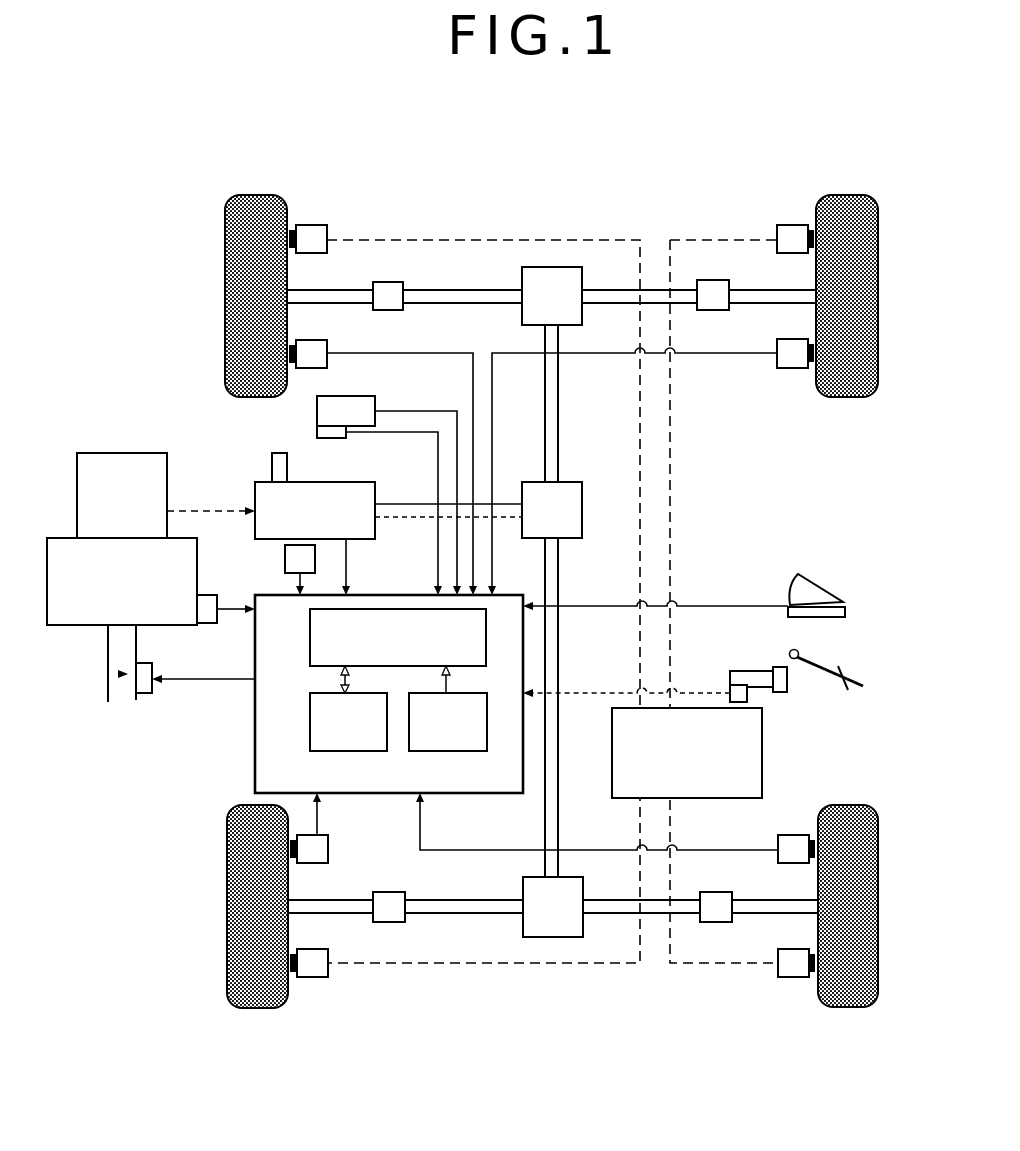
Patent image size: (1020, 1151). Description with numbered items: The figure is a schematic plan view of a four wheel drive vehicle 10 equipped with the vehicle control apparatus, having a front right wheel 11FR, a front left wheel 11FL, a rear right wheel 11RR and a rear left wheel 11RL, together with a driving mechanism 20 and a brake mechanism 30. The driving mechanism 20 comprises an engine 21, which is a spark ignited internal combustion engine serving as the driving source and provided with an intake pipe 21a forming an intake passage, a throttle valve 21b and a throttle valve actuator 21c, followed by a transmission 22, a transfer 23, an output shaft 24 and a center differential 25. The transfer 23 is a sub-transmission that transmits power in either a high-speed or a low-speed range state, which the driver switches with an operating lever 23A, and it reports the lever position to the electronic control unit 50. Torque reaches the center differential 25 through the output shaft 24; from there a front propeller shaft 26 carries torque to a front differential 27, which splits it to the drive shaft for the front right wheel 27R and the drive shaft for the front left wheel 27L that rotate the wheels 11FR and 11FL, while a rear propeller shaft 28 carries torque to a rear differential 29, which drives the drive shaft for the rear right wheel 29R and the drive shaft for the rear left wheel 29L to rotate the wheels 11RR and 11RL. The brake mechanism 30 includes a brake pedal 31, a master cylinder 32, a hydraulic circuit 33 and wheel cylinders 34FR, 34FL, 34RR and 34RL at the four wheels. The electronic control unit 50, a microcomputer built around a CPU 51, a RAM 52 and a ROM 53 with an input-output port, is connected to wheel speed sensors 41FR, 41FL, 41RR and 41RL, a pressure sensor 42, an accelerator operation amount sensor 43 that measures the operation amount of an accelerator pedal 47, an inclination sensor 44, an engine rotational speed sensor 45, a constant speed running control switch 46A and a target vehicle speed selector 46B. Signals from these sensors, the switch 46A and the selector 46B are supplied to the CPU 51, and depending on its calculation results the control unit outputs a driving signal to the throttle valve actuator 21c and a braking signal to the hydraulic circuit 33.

The vehicle 10 is at (158, 204).
The front left wheel 11FL is at (225, 272).
The front right wheel 11FR is at (843, 196).
The rear left wheel 11RL is at (227, 875).
The rear right wheel 11RR is at (843, 1008).
The driving mechanism 20 is at (98, 436).
The engine 21 is at (108, 621).
The intake pipe 21a is at (106, 680).
The throttle valve 21b is at (120, 676).
The throttle valve actuator 21c is at (147, 694).
The transmission 22 is at (108, 522).
The transfer 23 is at (255, 488).
The operating lever 23A is at (272, 462).
The output shaft 24 is at (516, 500).
The center differential 25 is at (583, 505).
The front propeller shaft 26 is at (559, 411).
The front differential 27 is at (520, 323).
The drive shaft for the front left wheel 27L is at (410, 291).
The drive shaft for the front right wheel 27R is at (729, 291).
The rear propeller shaft 28 is at (559, 581).
The rear differential 29 is at (522, 927).
The drive shaft for the rear left wheel 29L is at (428, 902).
The drive shaft for the rear right wheel 29R is at (733, 902).
The brake mechanism 30 is at (785, 708).
The brake pedal 31 is at (846, 672).
The master cylinder 32 is at (750, 669).
The hydraulic circuit 33 is at (673, 795).
The wheel cylinder 34FL is at (332, 212).
The wheel cylinder 34FR is at (785, 225).
The wheel cylinder 34RL is at (328, 958).
The wheel cylinder 34RR is at (786, 950).
The wheel speed sensor 41FL is at (330, 346).
The wheel speed sensor 41FR is at (783, 340).
The wheel speed sensor 41RL is at (328, 843).
The wheel speed sensor 41RR is at (786, 835).
The pressure sensor 42 is at (730, 686).
The accelerator operation amount sensor 43 is at (846, 610).
The inclination sensor 44 is at (285, 558).
The engine rotational speed sensor 45 is at (210, 624).
The constant speed running control switch 46A is at (317, 411).
The target vehicle speed selector 46B is at (317, 433).
The accelerator pedal 47 is at (828, 580).
The electronic control unit 50 is at (361, 694).
The CPU 51 is at (310, 647).
The RAM 52 is at (352, 752).
The ROM 53 is at (452, 752).